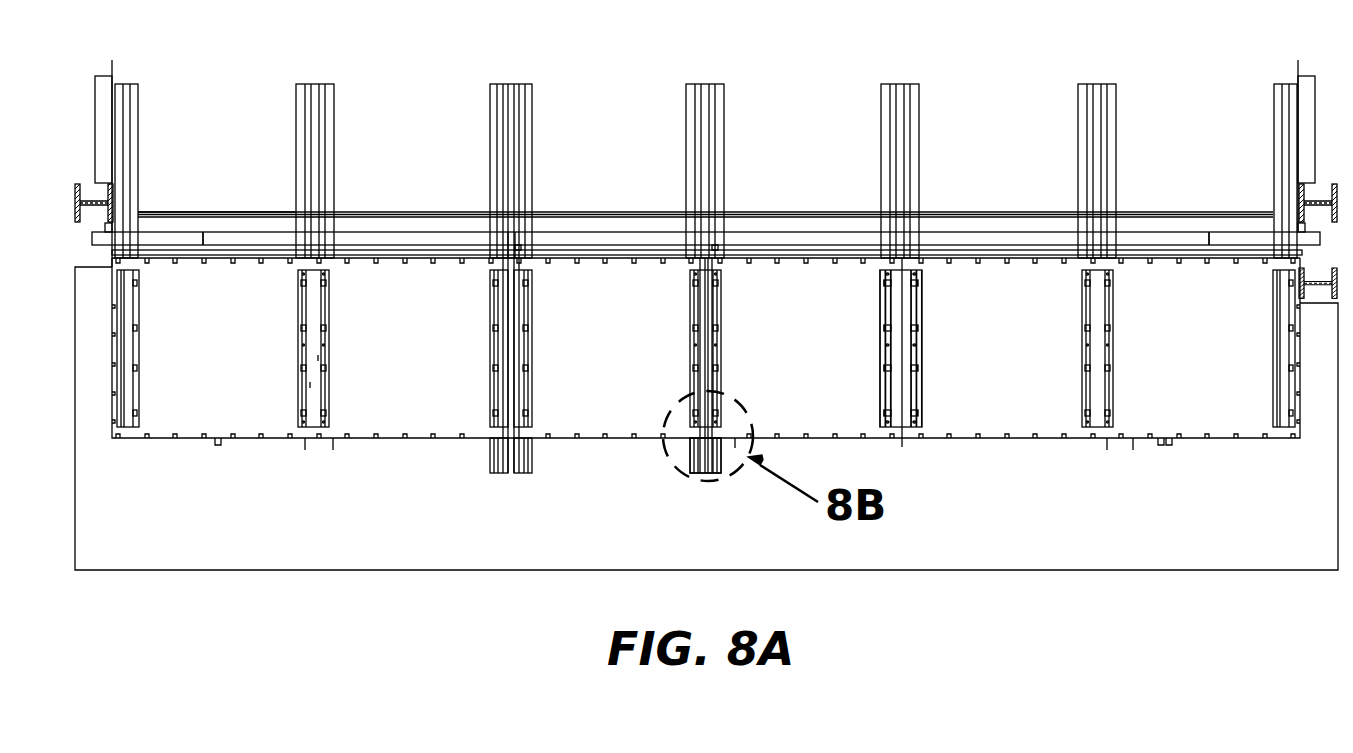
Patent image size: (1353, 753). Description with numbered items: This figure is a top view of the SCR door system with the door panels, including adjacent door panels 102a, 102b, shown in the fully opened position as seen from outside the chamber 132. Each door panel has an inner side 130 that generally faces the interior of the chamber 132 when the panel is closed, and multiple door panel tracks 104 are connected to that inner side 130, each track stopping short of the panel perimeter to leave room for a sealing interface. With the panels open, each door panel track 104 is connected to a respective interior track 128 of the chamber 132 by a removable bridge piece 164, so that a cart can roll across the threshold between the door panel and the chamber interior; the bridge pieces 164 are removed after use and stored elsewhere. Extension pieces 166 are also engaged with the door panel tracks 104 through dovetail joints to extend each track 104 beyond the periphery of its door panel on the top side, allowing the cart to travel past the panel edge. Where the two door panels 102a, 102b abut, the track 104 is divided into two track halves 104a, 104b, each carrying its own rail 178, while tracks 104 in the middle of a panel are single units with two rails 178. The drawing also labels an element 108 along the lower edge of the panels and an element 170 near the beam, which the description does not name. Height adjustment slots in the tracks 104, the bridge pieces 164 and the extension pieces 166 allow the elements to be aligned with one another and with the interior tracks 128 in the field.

The door panel 102a is at (209, 285).
The door panel 102b is at (649, 270).
The door panel track 104 is at (137, 303).
The track half 104a is at (493, 317).
The track half 104b is at (527, 310).
The panel 108 is at (246, 444).
The interior track 128 is at (714, 150).
The inner side 130 is at (407, 297).
The chamber 132 is at (250, 112).
The bridge piece 164 is at (520, 248).
The extension piece 166 is at (693, 452).
The coupling 170 is at (720, 248).
The rail 178 is at (310, 385).